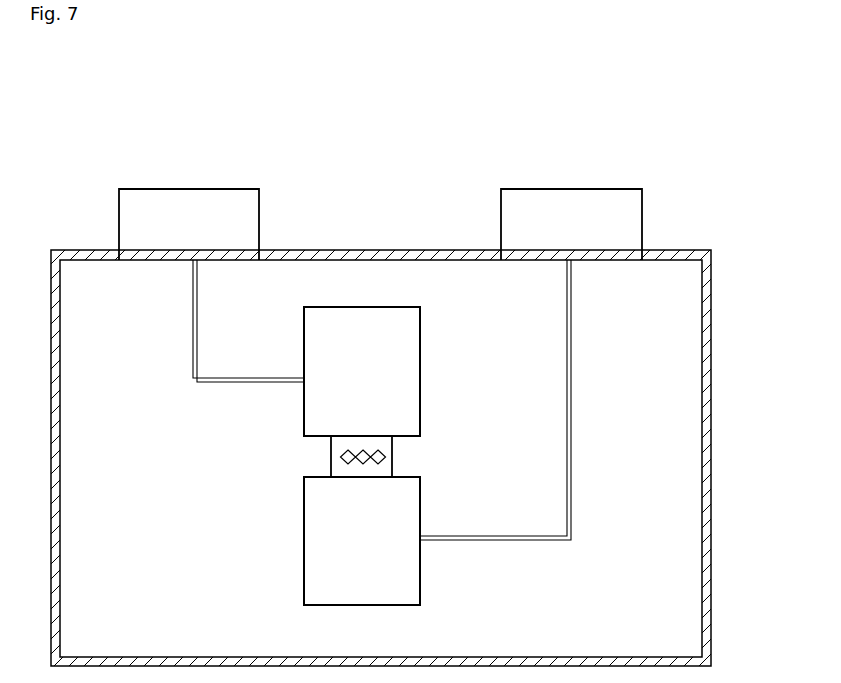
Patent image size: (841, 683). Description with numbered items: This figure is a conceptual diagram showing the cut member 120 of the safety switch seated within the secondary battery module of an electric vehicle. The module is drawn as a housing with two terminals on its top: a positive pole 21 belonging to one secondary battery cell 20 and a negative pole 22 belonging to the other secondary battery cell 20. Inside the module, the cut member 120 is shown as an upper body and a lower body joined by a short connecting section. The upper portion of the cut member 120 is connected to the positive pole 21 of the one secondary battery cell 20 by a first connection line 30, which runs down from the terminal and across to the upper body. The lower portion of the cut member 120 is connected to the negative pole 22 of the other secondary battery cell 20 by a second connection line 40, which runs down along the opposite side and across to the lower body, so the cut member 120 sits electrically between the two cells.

The secondary battery cell 20 is at (371, 228).
The positive pole 21 is at (185, 198).
The negative pole 22 is at (591, 200).
The first connection line 30 is at (193, 383).
The second connection line 40 is at (573, 448).
The cut member 120 is at (440, 361).